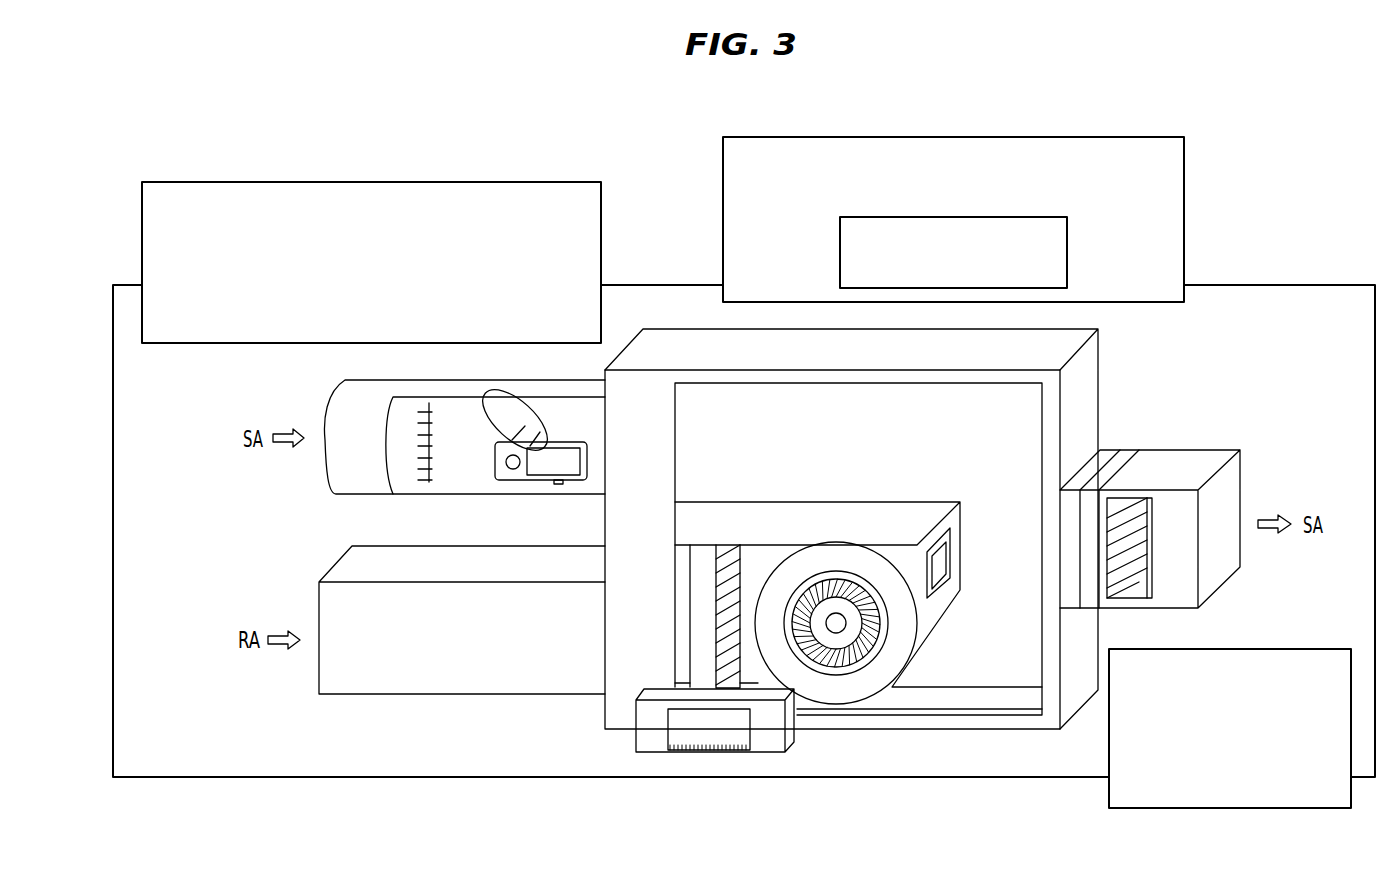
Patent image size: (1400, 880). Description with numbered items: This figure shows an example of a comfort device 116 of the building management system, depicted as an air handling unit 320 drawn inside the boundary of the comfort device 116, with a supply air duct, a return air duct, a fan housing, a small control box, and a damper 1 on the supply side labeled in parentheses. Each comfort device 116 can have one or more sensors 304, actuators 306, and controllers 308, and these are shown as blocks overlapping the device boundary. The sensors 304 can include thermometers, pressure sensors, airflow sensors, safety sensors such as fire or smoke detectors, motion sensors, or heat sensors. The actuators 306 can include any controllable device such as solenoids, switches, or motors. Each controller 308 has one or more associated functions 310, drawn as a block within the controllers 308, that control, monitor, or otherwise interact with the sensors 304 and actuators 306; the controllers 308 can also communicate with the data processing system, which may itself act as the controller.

The comfort device 116 is at (102, 507).
The sensors 304 is at (371, 262).
The actuators 306 is at (1230, 728).
The controllers 308 is at (953, 219).
The functions 310 is at (953, 252).
The air handling unit 320 is at (891, 587).
The damper 1 is at (1129, 570).